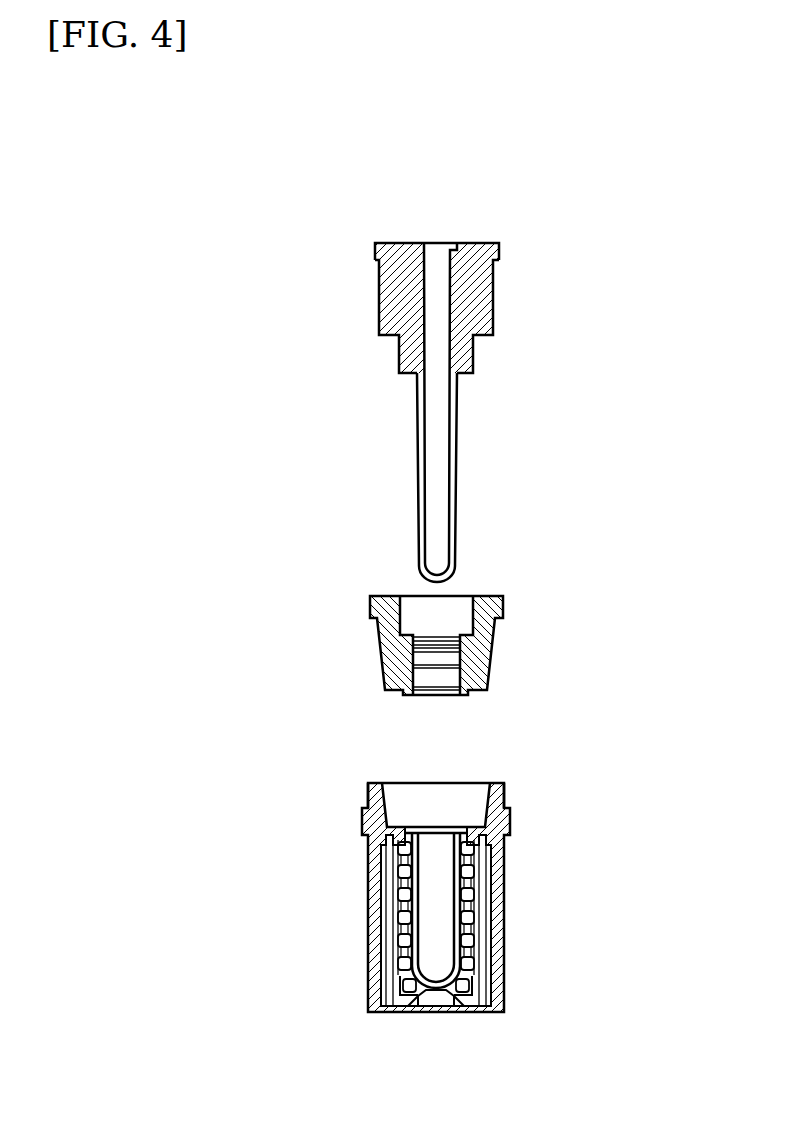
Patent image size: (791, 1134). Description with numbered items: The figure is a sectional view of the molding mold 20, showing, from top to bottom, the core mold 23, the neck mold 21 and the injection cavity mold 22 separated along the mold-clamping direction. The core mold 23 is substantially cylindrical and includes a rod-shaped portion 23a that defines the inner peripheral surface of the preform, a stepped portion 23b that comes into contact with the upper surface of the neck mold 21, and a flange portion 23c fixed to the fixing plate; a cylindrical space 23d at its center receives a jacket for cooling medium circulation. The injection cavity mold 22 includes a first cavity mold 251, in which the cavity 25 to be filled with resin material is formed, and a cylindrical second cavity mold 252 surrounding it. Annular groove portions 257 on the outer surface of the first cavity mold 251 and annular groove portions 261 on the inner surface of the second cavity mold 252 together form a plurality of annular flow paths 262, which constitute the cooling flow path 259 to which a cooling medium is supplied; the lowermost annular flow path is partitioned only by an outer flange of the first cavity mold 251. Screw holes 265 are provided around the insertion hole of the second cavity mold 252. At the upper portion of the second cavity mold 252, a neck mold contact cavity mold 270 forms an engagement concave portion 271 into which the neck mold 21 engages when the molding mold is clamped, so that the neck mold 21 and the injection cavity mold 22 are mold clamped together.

The molding mold 20 is at (622, 230).
The core mold 23 is at (263, 225).
The rod-shaped portion 23a is at (417, 403).
The stepped portion 23b is at (384, 288).
The flange portion 23c is at (378, 249).
The cylindrical space 23d is at (437, 468).
The neck mold 21 is at (485, 643).
The injection cavity mold 22 is at (338, 878).
The neck mold contact cavity mold 270 is at (505, 796).
The engagement concave portion 271 is at (388, 803).
The second cavity mold 252 is at (370, 907).
The screw holes 265 is at (388, 942).
The cavity 25 is at (443, 965).
The cooling flow path 259 is at (686, 810).
The annular flow paths 262 is at (478, 846).
The annular groove portions 261 is at (478, 916).
The annular groove portions 257 is at (472, 987).
The first cavity mold 251 is at (405, 1002).